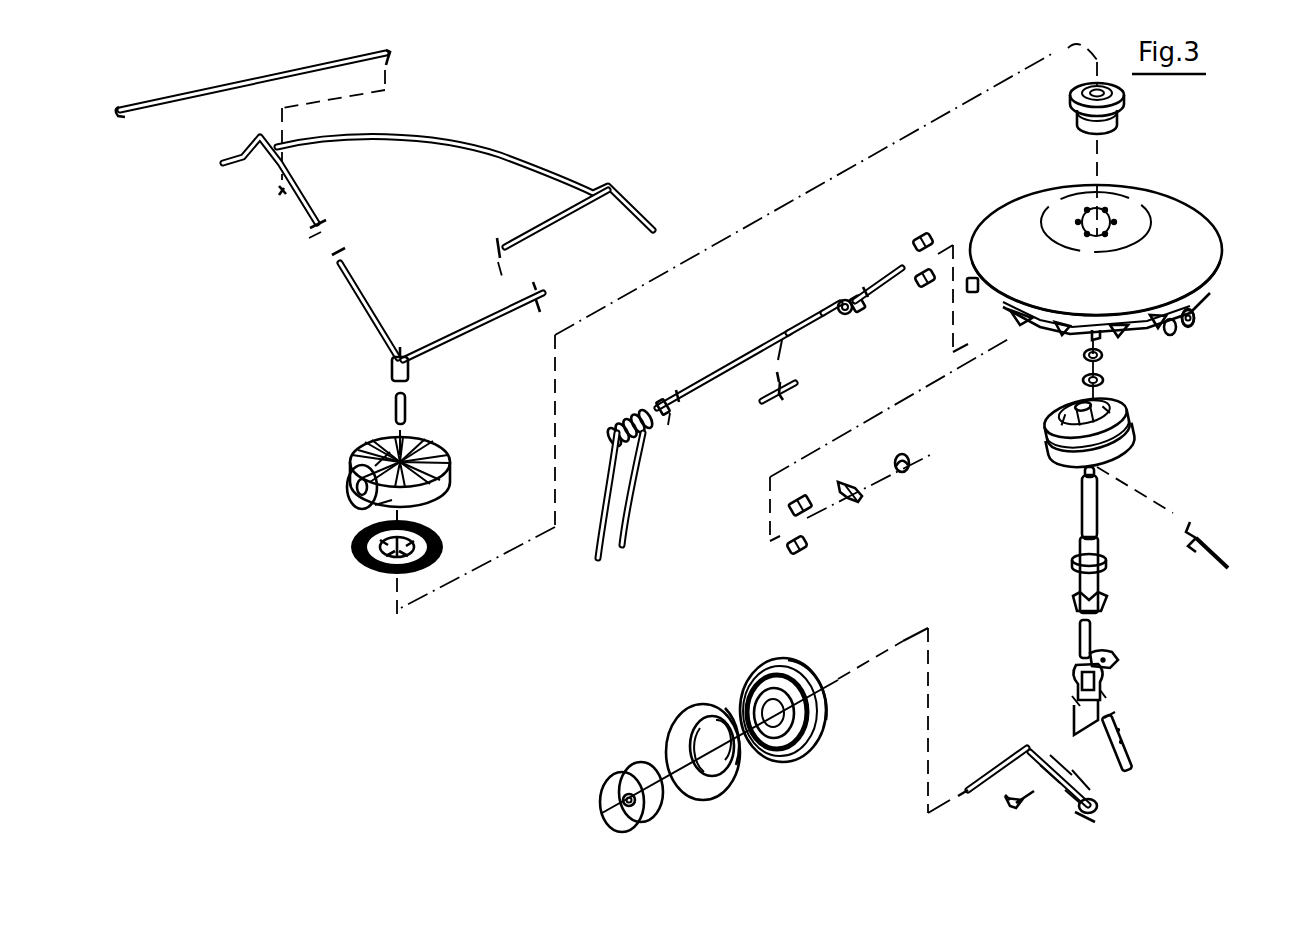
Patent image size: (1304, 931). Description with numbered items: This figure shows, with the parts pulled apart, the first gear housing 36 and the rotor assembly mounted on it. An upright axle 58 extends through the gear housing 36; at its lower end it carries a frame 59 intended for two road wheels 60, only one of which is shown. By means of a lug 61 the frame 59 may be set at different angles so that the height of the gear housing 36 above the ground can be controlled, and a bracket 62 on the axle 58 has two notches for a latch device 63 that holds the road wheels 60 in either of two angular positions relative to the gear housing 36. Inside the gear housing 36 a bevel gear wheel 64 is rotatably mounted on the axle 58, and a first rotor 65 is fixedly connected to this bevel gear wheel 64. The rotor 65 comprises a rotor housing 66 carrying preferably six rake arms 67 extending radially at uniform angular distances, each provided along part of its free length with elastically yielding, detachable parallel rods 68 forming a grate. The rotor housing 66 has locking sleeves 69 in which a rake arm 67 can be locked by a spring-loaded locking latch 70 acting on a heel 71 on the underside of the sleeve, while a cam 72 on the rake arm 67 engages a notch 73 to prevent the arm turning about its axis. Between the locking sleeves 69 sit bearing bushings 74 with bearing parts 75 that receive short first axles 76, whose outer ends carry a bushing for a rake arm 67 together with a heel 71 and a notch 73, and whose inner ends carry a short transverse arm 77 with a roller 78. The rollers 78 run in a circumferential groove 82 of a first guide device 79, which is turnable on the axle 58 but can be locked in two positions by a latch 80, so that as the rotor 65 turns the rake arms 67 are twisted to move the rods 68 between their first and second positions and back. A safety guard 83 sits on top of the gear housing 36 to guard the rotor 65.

The first gear housing 36 is at (372, 450).
The axle 58 is at (1094, 584).
The frame 59 is at (1073, 812).
The road wheels 60 is at (663, 847).
The lug 61 is at (1127, 737).
The bracket 62 is at (1096, 606).
The latch device 63 is at (1120, 661).
The bevel gear wheel 64 is at (357, 560).
The first rotor 65 is at (1192, 156).
The rotor housing 66 is at (1170, 207).
The rake arms 67 is at (722, 372).
The rods 68 is at (598, 548).
The locking sleeves 69 is at (1194, 314).
The locking latch 70 is at (770, 402).
The heel 71 is at (860, 309).
The cam 72 is at (788, 337).
The notch 73 is at (840, 320).
The bearing bushings 74 is at (1120, 345).
The bearing parts 75 is at (923, 234).
The first axles 76 is at (865, 288).
The transverse arm 77 is at (852, 500).
The roller 78 is at (905, 472).
The first guide device 79 is at (1130, 412).
The latch 80 is at (1217, 548).
The circumferential groove 82 is at (1127, 443).
The safety guard 83 is at (505, 157).